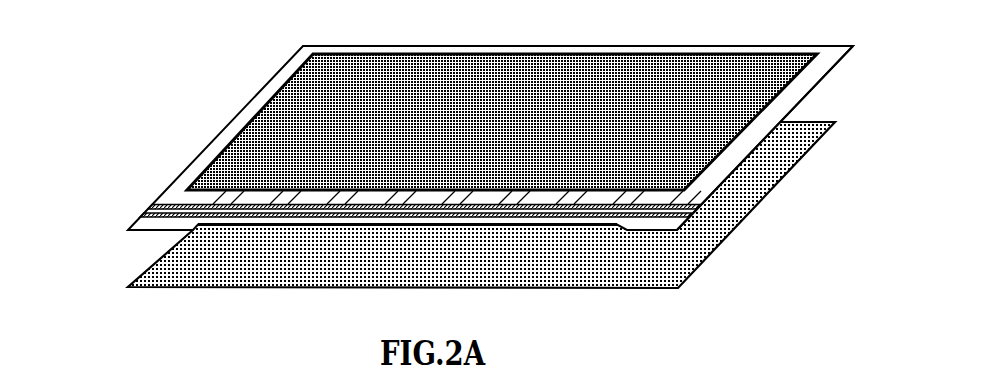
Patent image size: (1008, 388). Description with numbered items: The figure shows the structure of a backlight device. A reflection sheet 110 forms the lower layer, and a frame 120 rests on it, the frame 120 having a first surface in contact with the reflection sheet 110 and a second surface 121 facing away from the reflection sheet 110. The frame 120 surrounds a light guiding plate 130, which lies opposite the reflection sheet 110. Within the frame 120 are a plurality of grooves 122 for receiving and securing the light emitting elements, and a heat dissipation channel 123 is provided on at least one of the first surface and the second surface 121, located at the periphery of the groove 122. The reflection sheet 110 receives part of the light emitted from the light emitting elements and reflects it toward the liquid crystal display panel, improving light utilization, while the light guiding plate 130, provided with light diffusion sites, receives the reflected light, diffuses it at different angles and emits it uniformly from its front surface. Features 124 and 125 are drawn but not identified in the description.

The reflection sheet 110 is at (200, 282).
The frame 120 is at (177, 190).
The second surface 121 is at (763, 130).
The groove 122 is at (647, 199).
The heat dissipation channel 123 is at (704, 207).
The frame layer 124 is at (132, 220).
The edge region 125 is at (731, 176).
The light guiding plate 130 is at (800, 65).